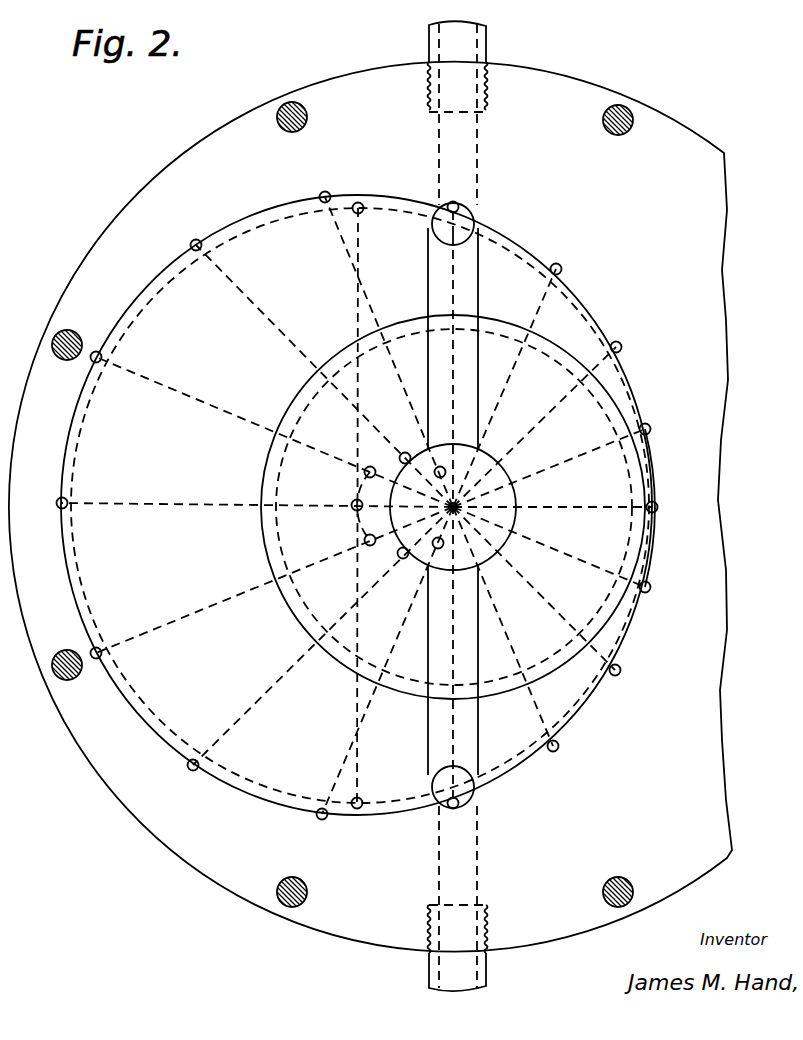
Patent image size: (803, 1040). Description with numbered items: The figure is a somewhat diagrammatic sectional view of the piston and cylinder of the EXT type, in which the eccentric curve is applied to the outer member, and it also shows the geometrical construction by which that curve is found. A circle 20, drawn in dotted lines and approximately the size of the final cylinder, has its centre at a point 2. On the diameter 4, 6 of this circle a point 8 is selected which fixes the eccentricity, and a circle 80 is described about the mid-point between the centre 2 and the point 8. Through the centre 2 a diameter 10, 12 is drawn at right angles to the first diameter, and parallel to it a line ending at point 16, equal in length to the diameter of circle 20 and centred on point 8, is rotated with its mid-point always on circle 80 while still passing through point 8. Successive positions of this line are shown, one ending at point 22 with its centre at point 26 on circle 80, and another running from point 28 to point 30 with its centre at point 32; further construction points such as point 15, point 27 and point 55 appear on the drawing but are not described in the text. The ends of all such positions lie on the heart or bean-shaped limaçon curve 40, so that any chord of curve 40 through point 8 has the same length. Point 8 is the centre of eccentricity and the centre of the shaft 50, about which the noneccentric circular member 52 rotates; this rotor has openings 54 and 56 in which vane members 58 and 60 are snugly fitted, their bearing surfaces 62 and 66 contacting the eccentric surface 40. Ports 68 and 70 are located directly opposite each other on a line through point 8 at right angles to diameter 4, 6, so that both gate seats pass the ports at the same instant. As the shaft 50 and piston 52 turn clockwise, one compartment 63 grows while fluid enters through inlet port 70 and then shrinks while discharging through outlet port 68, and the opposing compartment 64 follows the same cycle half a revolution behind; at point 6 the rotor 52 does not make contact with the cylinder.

The centre 2 is at (355, 505).
The diameter end point 4 is at (62, 503).
The diameter end point 6 is at (654, 509).
The centre of eccentricity 8 is at (456, 507).
The diameter end point 10 is at (360, 206).
The diameter end point 12 is at (357, 806).
The pin 15 is at (455, 204).
The line end point 16 is at (458, 805).
The circle 20 is at (290, 217).
The line end point 22 is at (325, 197).
The centre point 26 is at (442, 470).
The pin 27 is at (555, 748).
The line end point 28 is at (196, 245).
The line end point 30 is at (617, 671).
The centre point 32 is at (405, 458).
The eccentric curve 40 is at (518, 240).
The shaft 50 is at (505, 470).
The noneccentric circular member 52 is at (565, 340).
The opening 54 is at (428, 318).
The ring portion 55 is at (652, 472).
The opening 56 is at (478, 705).
The vane member 58 is at (462, 272).
The vane member 60 is at (437, 748).
The bearing surface 62 is at (473, 215).
The compartment 63 is at (513, 290).
The compartment 64 is at (160, 320).
The bearing surface 66 is at (445, 800).
The port 68 is at (452, 130).
The port 70 is at (455, 858).
The circle 80 is at (370, 472).